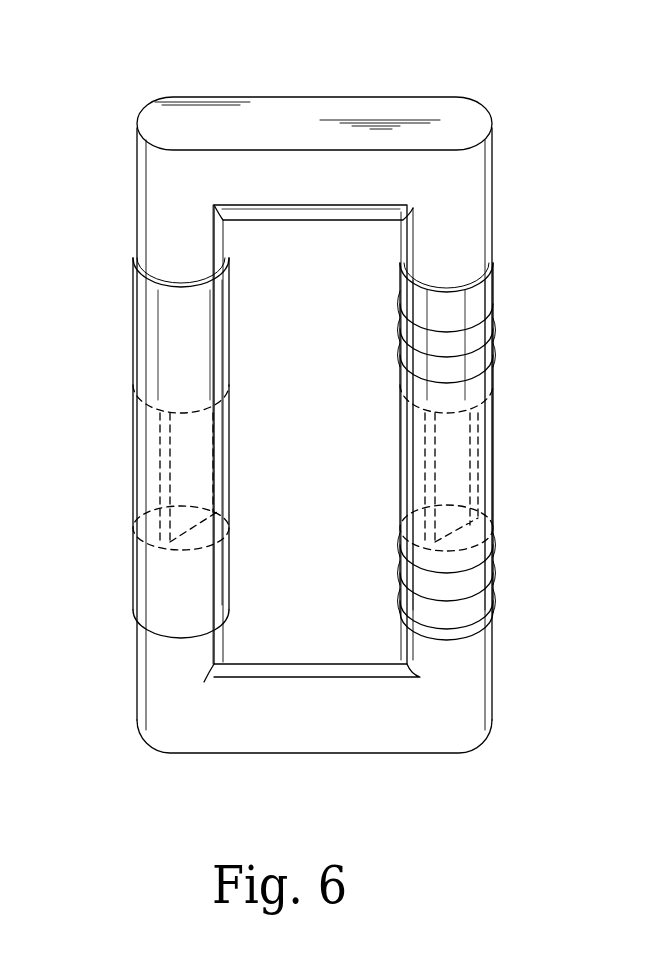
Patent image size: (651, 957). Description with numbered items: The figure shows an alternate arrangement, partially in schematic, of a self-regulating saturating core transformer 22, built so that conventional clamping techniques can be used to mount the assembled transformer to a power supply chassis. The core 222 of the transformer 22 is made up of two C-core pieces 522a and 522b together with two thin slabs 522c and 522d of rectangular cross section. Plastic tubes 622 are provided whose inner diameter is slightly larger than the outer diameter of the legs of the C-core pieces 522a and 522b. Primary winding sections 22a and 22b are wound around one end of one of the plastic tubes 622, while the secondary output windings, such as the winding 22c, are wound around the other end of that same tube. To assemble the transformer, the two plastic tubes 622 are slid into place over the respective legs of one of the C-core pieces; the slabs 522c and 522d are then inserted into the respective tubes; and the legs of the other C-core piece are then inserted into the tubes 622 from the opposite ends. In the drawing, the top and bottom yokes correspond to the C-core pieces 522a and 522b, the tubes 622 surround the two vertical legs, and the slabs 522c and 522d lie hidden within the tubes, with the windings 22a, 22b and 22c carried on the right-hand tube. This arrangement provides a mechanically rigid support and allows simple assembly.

The transformer 22 is at (520, 56).
The primary winding section 22a is at (493, 283).
The primary winding section 22b is at (532, 404).
The secondary output winding 22c is at (470, 570).
The core 222 is at (323, 371).
The C-core piece 522a is at (335, 100).
The C-core piece 522b is at (450, 745).
The thin slab 522c is at (483, 472).
The thin slab 522d is at (165, 430).
The plastic tube 622 is at (400, 613).